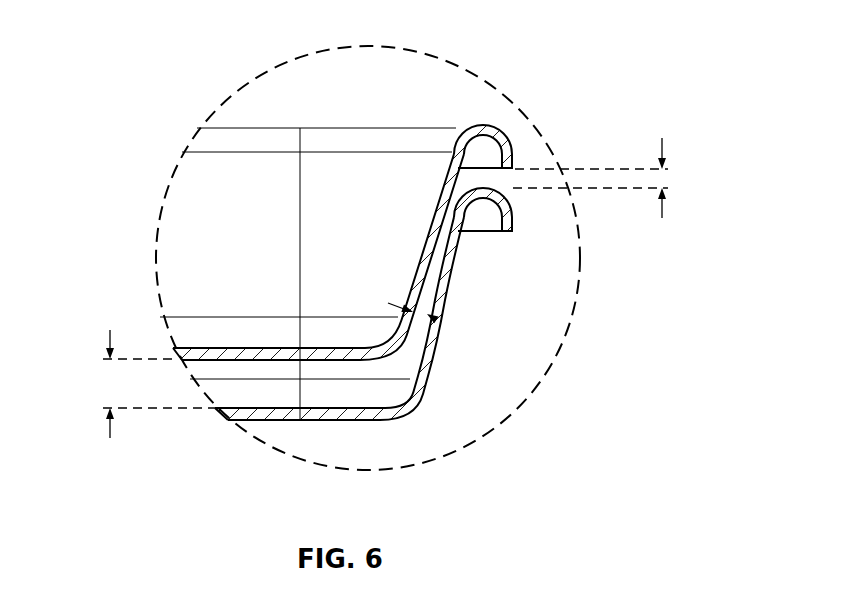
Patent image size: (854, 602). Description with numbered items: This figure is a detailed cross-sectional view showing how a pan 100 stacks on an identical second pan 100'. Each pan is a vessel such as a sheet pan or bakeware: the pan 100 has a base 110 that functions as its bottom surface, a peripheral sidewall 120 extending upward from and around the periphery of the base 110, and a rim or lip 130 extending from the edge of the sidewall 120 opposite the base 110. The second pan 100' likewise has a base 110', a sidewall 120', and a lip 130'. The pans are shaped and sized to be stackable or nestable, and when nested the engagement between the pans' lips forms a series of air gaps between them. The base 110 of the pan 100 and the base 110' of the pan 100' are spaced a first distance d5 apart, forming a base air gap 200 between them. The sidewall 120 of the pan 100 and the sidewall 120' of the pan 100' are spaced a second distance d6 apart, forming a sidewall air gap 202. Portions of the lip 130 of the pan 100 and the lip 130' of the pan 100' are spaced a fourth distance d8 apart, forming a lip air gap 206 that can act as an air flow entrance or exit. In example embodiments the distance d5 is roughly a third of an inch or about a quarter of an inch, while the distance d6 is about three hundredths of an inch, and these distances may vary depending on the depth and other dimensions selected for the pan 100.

The pan 100 is at (422, 244).
The pan 100' is at (422, 315).
The base 110 is at (269, 341).
The base 110' is at (288, 439).
The sidewall 120 is at (407, 257).
The sidewall 120' is at (460, 318).
The lip 130 is at (529, 135).
The lip 130' is at (541, 187).
The base air gap 200 is at (368, 399).
The sidewall air gap 202 is at (427, 277).
The lip air gap 206 is at (478, 172).
The distance d5 is at (106, 333).
The distance d6 is at (434, 319).
The distance d8 is at (664, 143).